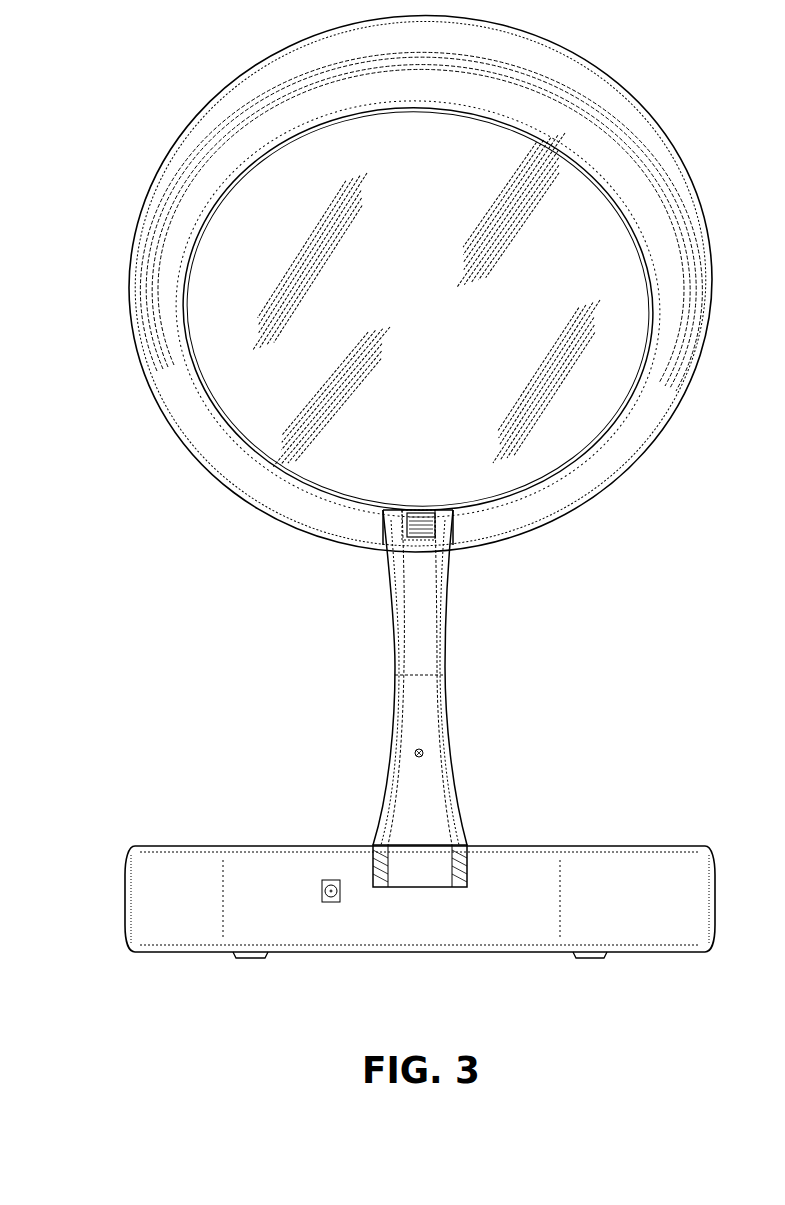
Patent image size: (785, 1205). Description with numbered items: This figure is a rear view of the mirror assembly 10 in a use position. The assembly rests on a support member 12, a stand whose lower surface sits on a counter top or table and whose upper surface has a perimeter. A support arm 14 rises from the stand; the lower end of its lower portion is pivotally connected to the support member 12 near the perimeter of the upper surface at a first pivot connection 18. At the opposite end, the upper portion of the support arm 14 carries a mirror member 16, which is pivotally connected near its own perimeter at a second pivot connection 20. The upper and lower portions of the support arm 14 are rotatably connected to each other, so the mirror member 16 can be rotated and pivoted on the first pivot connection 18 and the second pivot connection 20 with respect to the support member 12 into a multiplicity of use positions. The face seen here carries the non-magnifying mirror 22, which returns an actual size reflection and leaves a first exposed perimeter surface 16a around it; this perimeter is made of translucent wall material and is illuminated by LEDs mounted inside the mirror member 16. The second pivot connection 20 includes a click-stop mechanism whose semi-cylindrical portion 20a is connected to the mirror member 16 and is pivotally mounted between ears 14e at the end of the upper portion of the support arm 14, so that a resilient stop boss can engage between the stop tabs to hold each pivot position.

The mirror assembly 10 is at (197, 608).
The support member 12 is at (162, 958).
The support arm 14 is at (458, 673).
The ears 14e is at (393, 533).
The mirror member 16 is at (188, 100).
The first exposed perimeter surface 16a is at (615, 165).
The first pivot connection 18 is at (433, 883).
The second pivot connection 20 is at (440, 538).
The semi-cylindrical portion 20a is at (423, 516).
The non-magnifying mirror 22 is at (565, 363).